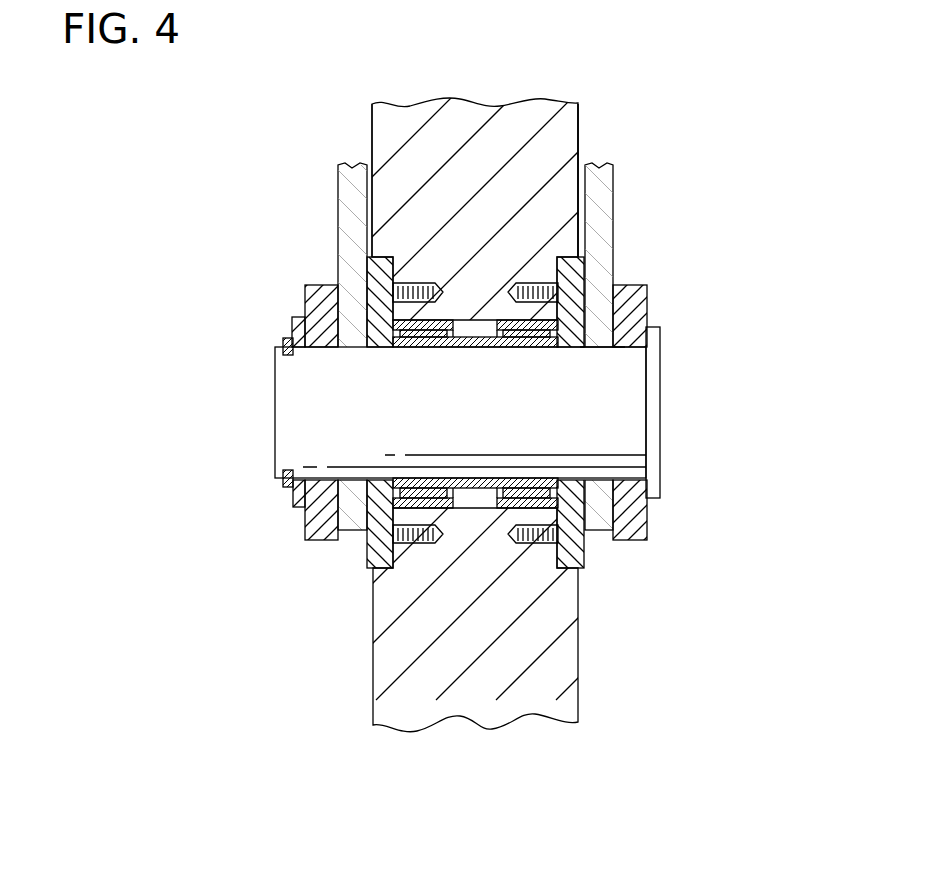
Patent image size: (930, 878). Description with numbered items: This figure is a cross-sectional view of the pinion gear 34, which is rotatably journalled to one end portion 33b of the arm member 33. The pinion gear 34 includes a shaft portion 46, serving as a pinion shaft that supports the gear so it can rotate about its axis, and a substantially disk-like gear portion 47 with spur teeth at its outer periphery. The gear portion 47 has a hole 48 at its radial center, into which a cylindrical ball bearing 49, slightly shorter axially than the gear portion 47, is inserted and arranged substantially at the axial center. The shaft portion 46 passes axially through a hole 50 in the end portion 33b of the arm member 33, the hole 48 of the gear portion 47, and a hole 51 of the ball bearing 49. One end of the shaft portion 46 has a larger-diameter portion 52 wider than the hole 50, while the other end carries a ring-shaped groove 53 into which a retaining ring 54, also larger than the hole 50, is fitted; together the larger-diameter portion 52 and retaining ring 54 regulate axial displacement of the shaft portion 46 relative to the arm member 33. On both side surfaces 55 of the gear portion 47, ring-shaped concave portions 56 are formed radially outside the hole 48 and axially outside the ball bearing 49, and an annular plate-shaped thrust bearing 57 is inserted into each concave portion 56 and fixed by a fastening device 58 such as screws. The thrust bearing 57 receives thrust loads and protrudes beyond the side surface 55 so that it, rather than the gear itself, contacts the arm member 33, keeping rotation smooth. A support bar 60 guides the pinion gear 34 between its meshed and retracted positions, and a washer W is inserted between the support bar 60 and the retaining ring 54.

The pinion gear 34 is at (582, 117).
The gear portion 47 is at (388, 125).
The side surfaces 55 is at (372, 148).
The one end portion 33b is at (348, 200).
The arm member 33 is at (466, 346).
The concave portion 56 is at (370, 273).
The thrust bearing 57 is at (373, 548).
The fastening device 58 is at (537, 283).
The support bar 60 is at (322, 537).
The washer W is at (297, 333).
The hole 48 is at (423, 323).
The ball bearing 49 is at (478, 343).
The hole 50 is at (597, 348).
The hole 51 is at (423, 480).
The shaft portion 46 is at (620, 410).
The larger-diameter portion 52 is at (660, 475).
The groove 53 is at (288, 481).
The retaining ring 54 is at (295, 492).